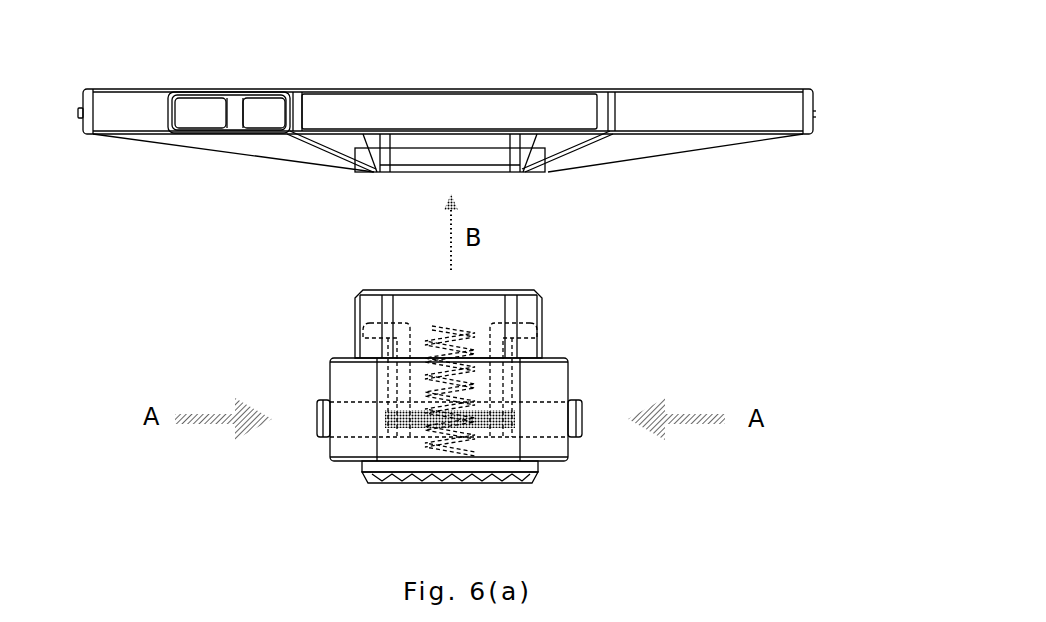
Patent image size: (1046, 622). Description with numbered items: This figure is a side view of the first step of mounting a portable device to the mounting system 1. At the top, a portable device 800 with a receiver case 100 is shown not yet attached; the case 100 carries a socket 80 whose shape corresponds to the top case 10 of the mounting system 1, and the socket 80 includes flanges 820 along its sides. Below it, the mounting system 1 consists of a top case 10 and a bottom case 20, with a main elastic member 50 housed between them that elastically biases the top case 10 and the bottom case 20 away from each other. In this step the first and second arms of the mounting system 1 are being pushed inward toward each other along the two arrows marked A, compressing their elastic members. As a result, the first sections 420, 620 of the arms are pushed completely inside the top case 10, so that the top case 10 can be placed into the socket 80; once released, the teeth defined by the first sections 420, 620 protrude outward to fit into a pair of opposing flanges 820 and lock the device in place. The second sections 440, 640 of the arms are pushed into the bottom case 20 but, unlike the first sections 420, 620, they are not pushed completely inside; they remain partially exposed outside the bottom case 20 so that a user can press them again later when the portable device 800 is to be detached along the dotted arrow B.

The mounting system 1 is at (446, 404).
The top case 10 is at (560, 290).
The bottom case 20 is at (332, 448).
The main elastic member 50 is at (448, 448).
The socket 80 is at (486, 163).
The case 100 is at (660, 148).
The first section of the first arm 420 is at (360, 336).
The second section of the first arm 440 is at (318, 426).
The first section of the second arm 620 is at (527, 333).
The second section of the second arm 640 is at (583, 425).
The portable device 800 is at (530, 106).
The flange 820 is at (350, 172).